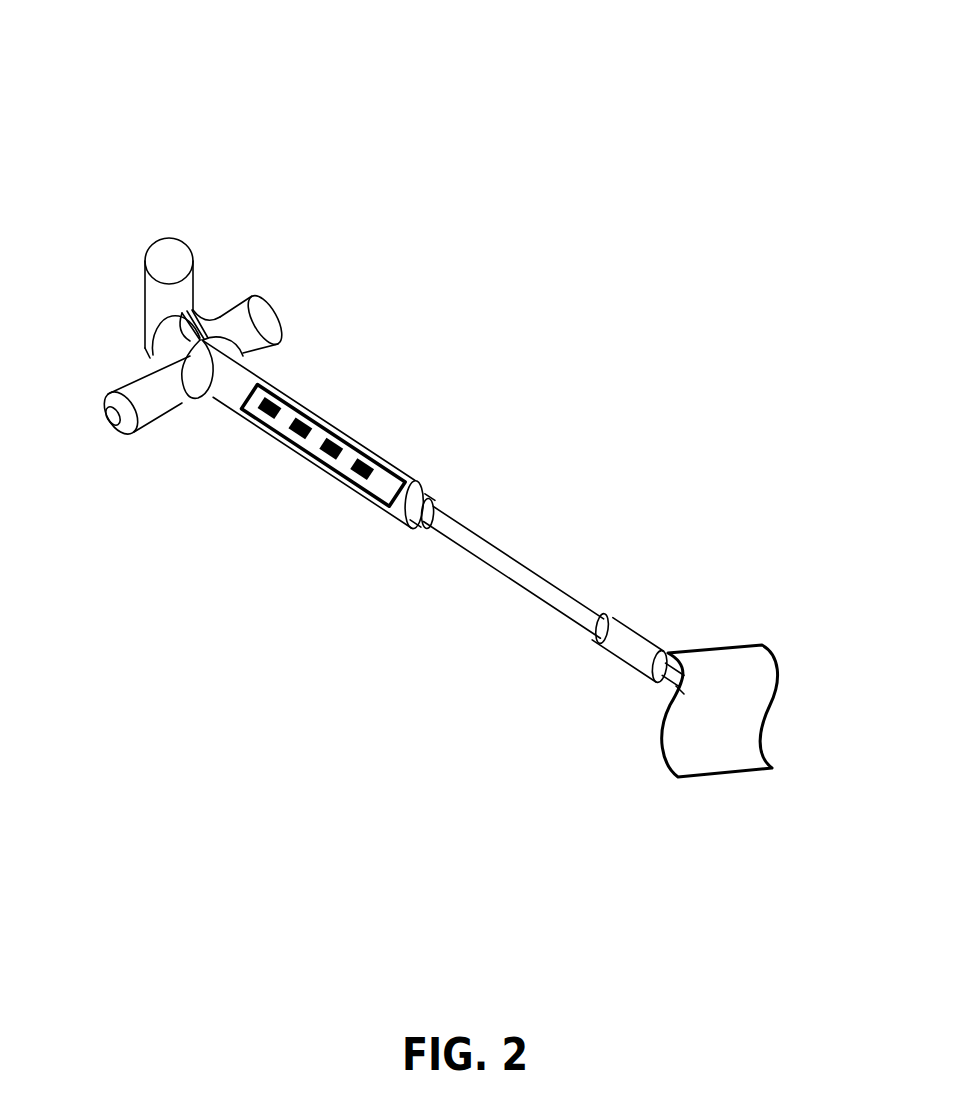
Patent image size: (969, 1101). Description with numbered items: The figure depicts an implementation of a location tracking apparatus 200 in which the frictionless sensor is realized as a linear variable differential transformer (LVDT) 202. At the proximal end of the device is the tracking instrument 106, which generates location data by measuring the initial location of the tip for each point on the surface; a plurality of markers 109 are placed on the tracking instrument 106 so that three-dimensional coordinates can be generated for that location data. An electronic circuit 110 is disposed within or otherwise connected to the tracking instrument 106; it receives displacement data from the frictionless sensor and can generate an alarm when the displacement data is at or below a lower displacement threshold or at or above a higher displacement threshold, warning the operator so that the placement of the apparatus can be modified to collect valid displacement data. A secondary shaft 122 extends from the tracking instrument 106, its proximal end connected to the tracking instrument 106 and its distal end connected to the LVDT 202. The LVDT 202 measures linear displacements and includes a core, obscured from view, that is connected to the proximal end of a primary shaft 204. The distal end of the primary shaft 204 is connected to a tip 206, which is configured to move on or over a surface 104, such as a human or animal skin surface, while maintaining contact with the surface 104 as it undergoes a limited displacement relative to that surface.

The location tracking apparatus 200 is at (760, 94).
The markers 109 is at (103, 408).
The electronic circuit 110 is at (407, 482).
The tracking instrument 106 is at (412, 527).
The secondary shaft 122 is at (523, 573).
The linear variable differential transformer (LVDT) 202 is at (647, 650).
The primary shaft 204 is at (665, 682).
The tip 206 is at (673, 692).
The surface 104 is at (678, 778).